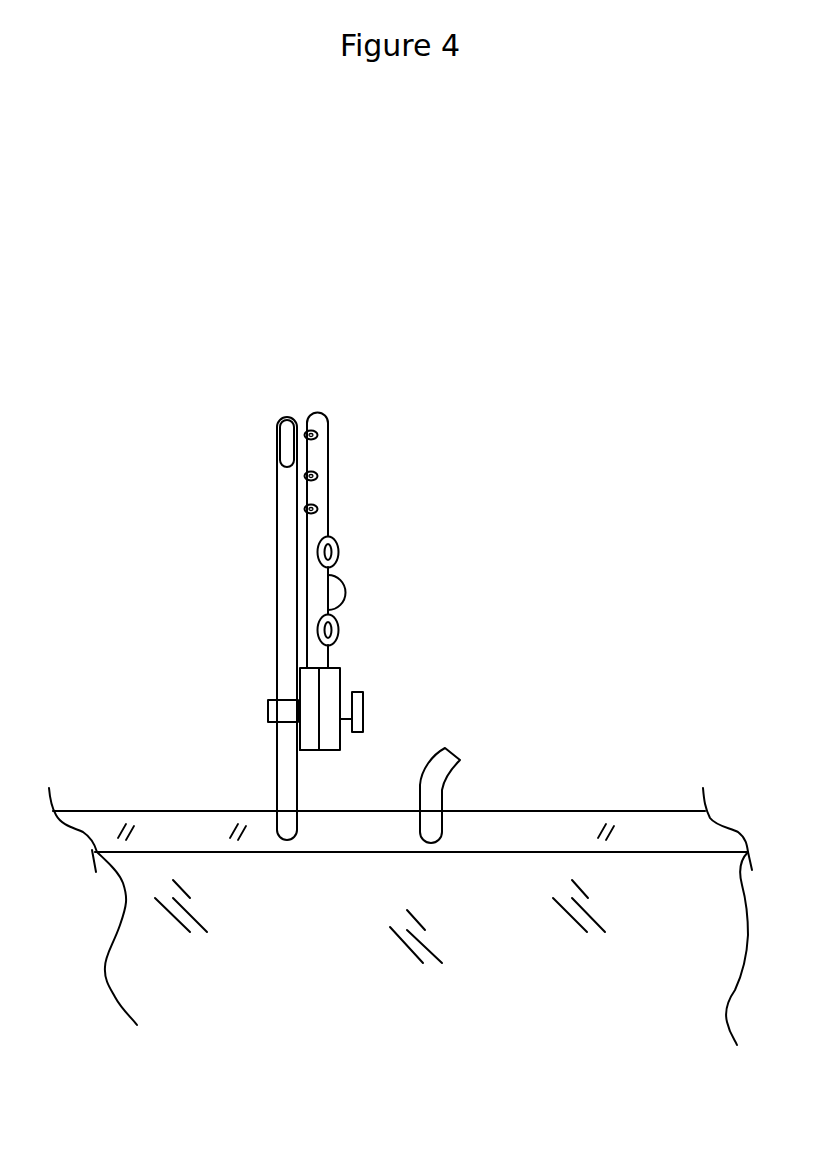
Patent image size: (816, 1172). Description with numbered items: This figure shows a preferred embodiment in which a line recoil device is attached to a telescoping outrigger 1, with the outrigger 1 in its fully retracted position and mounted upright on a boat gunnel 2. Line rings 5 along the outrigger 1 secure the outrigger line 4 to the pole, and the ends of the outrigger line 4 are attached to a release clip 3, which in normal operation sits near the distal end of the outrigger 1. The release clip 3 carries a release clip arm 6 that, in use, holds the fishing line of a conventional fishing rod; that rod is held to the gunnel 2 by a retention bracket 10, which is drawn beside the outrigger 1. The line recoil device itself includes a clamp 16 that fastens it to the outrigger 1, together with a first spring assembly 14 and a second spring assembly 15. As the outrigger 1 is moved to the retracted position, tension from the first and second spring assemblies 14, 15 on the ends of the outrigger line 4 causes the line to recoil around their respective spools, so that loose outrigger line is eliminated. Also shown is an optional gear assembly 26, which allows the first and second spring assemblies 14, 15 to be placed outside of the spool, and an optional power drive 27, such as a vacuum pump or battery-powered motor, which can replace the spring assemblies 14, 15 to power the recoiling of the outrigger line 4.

The telescoping outrigger 1 is at (276, 627).
The boat gunnel 2 is at (196, 820).
The release clip 3 is at (337, 553).
The outrigger line 4 is at (332, 466).
The line rings 5 is at (305, 509).
The release clip arm 6 is at (347, 593).
The retention bracket 10 is at (428, 799).
The first spring assembly 14 is at (340, 740).
The second spring assembly 15 is at (310, 752).
The clamp 16 is at (268, 710).
The gear assembly 26 is at (347, 703).
The power drive 27 is at (364, 718).